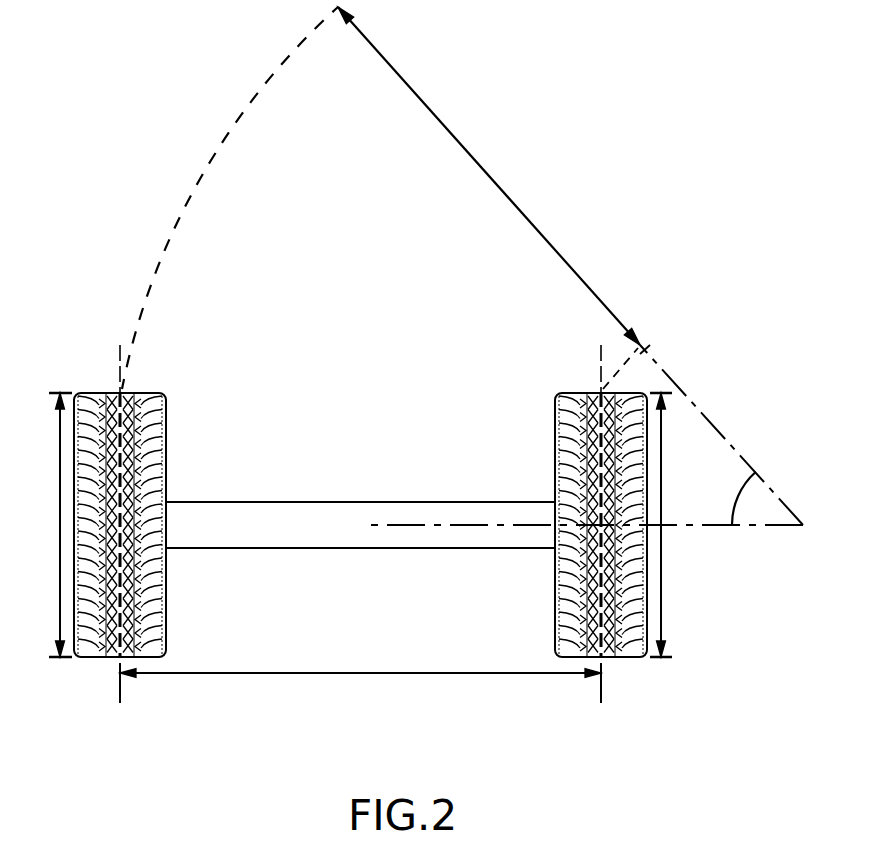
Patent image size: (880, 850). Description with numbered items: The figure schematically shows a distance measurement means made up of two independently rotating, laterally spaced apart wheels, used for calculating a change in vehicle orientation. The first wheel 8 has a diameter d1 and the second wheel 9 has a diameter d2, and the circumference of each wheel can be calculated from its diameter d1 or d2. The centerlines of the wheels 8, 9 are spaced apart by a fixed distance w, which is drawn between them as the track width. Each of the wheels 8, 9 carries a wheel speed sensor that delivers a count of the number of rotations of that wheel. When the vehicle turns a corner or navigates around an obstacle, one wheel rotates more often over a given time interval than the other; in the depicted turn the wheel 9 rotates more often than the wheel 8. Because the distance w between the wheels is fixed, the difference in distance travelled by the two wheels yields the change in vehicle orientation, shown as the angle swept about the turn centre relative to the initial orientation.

The first wheel 8 is at (630, 640).
The second wheel 9 is at (93, 640).
The distance between the wheel centerlines w is at (385, 356).
The diameter of the first wheel d1 is at (679, 525).
The diameter of the second wheel d2 is at (42, 525).